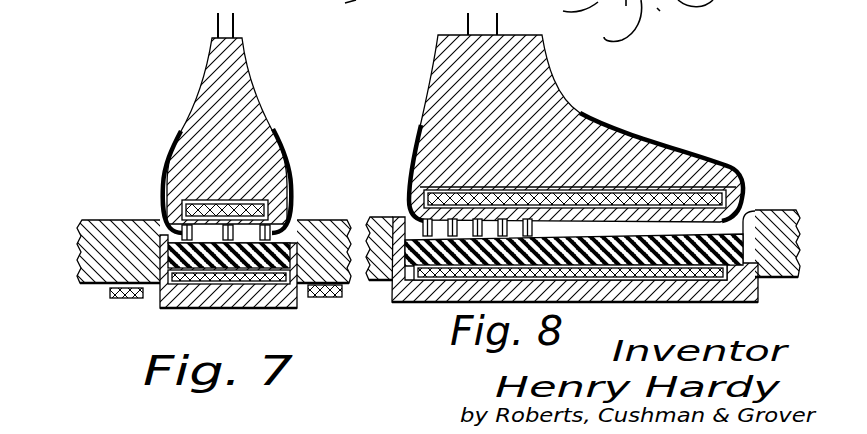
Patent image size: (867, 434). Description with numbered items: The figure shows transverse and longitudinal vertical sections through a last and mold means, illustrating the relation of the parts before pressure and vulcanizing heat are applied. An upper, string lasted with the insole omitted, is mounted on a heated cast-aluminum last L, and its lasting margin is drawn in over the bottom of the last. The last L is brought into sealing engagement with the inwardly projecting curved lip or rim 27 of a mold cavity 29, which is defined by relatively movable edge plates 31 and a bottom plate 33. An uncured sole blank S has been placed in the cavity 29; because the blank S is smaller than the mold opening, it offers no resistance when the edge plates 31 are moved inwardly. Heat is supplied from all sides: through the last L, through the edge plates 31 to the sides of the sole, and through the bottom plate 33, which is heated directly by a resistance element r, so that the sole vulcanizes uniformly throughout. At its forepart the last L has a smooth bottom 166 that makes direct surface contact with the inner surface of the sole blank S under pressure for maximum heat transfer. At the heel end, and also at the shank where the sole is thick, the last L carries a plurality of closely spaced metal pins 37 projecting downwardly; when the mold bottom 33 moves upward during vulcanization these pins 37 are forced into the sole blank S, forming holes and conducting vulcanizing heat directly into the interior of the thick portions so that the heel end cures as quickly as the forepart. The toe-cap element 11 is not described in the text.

In FIG. 7, the last L is at (247, 107).
In FIG. 8, the last L is at (442, 83).
In FIG. 8, the toe cap binding 11 is at (638, 137).
In FIG. 7, the rim of mold cavity 27 is at (163, 217).
In FIG. 7, the mold cavity 29 is at (163, 221).
In FIG. 7, the edge plates 31 is at (132, 281).
In FIG. 8, the edge plates 31 is at (800, 180).
In FIG. 7, the bottom plate of mold 33 is at (273, 309).
In FIG. 8, the bottom plate of mold 33 is at (737, 291).
In FIG. 7, the pins 37 is at (273, 234).
In FIG. 8, the pins 37 is at (477, 227).
In FIG. 7, the uncured sole blank S is at (207, 267).
In FIG. 8, the uncured sole blank S is at (460, 265).
In FIG. 7, the resistance element r is at (110, 293).
In FIG. 8, the resistance element r is at (420, 282).
In FIG. 8, the smooth bottom of last 166 is at (620, 218).